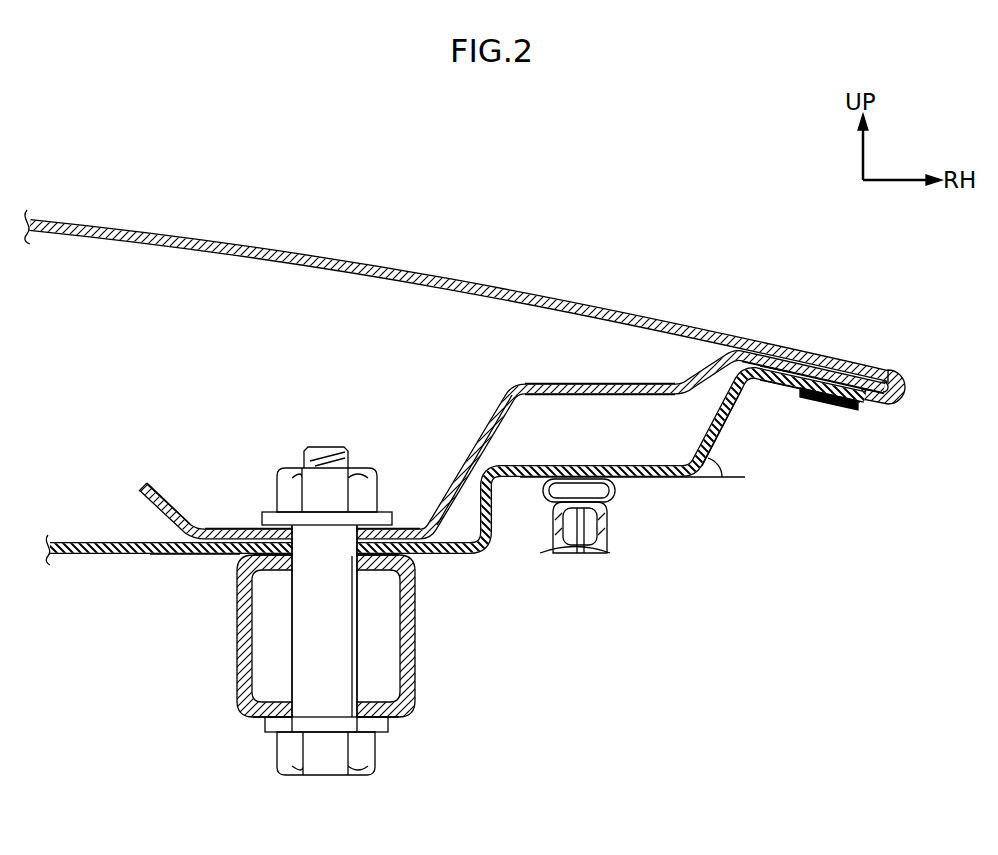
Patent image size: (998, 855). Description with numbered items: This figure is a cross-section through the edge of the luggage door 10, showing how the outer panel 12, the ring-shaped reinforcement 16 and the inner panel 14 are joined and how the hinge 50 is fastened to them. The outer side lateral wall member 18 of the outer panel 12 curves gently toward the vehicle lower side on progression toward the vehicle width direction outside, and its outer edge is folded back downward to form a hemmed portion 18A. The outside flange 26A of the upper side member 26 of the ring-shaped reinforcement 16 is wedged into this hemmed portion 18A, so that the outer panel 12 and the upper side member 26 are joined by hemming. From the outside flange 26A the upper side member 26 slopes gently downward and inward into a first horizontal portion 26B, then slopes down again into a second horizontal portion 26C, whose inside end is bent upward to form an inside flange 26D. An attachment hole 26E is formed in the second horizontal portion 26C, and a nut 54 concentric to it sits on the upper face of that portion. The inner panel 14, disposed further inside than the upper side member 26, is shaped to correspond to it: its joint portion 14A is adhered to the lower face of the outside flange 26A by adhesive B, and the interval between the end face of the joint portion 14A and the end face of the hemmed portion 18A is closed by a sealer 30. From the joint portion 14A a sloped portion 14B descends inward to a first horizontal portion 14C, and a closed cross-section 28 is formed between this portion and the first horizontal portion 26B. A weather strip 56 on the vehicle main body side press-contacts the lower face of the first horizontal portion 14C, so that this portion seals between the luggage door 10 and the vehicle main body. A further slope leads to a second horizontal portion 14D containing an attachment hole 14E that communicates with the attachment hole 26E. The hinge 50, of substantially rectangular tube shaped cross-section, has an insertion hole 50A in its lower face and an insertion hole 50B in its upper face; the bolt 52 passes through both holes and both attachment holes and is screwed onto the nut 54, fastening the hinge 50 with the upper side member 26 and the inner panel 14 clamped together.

The luggage door 10 is at (540, 201).
The outer panel 12 is at (507, 315).
The inner panel 14 is at (138, 556).
The joint portion 14A is at (777, 395).
The sloped portion 14B is at (713, 366).
The first horizontal portion 14C is at (650, 480).
The second horizontal portion 14D is at (192, 558).
The attachment hole 14E is at (297, 540).
The ring-shaped reinforcement 16 is at (531, 385).
The outer side lateral wall member 18 is at (208, 238).
The hemmed portion 18A is at (893, 400).
The upper side member 26 is at (595, 387).
The outside flange 26A is at (808, 366).
The first horizontal portion 26B is at (540, 383).
The second horizontal portion 26C is at (230, 527).
The inside flange 26D is at (163, 492).
The attachment hole 26E is at (347, 527).
The closed cross-section 28 is at (607, 436).
The sealer 30 is at (850, 412).
The hinge 50 is at (416, 638).
The insertion hole 50A is at (295, 710).
The insertion hole 50B is at (296, 560).
The bolt 52 is at (375, 750).
The nut 54 is at (356, 467).
The weather strip 56 is at (547, 540).
The adhesive B is at (772, 366).